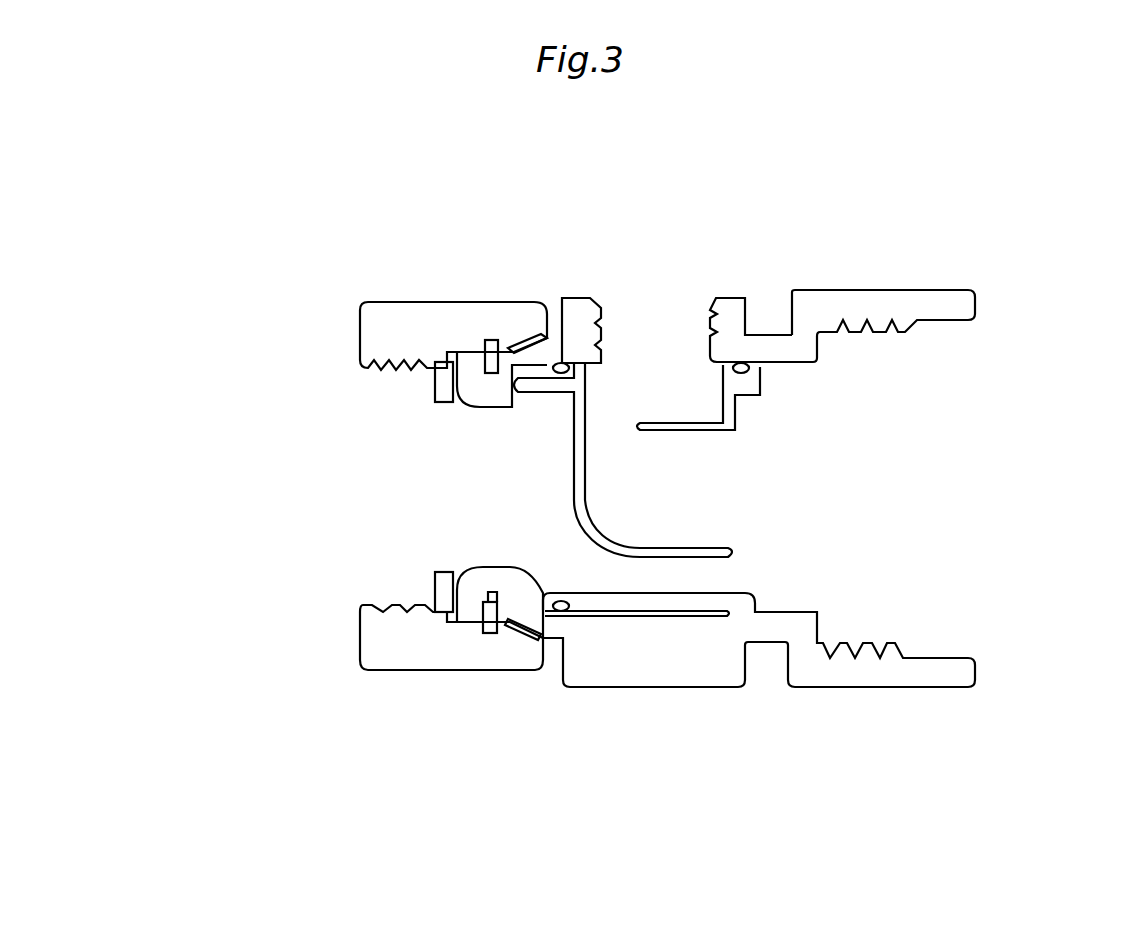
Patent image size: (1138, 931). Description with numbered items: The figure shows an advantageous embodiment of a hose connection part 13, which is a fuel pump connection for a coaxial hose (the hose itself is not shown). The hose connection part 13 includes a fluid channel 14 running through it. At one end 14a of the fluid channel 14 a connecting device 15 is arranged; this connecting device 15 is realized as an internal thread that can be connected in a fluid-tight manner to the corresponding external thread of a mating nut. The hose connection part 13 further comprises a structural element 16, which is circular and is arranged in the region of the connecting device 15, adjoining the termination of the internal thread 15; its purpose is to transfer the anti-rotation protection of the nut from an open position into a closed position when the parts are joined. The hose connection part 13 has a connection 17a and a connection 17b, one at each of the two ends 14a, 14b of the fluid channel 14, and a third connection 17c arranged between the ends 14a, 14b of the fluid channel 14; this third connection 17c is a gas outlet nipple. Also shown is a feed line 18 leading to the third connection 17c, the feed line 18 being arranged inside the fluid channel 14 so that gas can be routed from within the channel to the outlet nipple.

The hose connection part 13 is at (845, 320).
The fluid channel 14 is at (541, 545).
The one end of the fluid channel 14a is at (720, 575).
The other end of the fluid channel 14b is at (495, 470).
The connecting device 15 is at (877, 654).
The structural element 16 is at (815, 356).
The connection 17a is at (362, 672).
The connection 17b is at (990, 299).
The third connection 17c is at (656, 328).
The feed line 18 is at (716, 480).